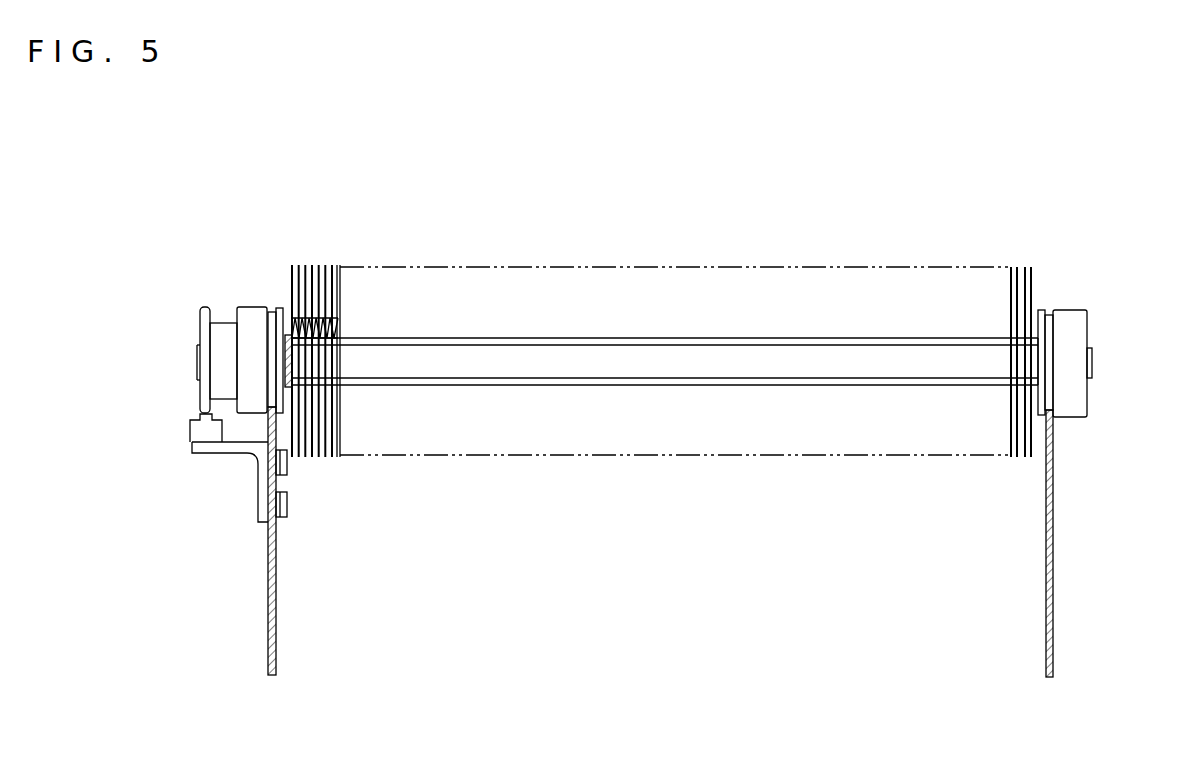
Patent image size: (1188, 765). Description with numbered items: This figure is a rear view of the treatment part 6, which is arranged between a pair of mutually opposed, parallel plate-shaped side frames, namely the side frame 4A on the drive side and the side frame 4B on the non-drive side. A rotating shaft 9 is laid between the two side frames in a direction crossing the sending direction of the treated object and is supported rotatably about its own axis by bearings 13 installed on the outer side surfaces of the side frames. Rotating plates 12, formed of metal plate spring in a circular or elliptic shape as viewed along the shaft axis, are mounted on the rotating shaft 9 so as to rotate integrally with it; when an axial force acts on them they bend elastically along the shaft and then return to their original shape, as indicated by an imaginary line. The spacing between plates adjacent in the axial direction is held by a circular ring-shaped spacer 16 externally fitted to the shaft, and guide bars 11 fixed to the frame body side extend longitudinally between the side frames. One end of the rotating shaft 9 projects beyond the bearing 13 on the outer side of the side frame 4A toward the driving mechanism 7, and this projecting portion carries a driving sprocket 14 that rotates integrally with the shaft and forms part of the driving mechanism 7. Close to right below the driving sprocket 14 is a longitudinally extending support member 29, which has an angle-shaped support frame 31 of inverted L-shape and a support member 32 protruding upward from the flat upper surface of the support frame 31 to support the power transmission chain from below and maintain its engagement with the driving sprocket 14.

The treatment part 6 is at (885, 212).
The rotating shaft 9 is at (638, 343).
The rotating plate 12 is at (332, 268).
The guide bar 11 is at (318, 320).
The spacer 16 is at (333, 388).
The bearing 13 is at (253, 307).
The driving sprocket 14 is at (198, 338).
The driving mechanism 7 is at (167, 500).
The support member 32 is at (190, 430).
The support member 29 is at (242, 472).
The support frame 31 is at (257, 493).
The side frame on the drive side 4A is at (268, 645).
The side frame on the non-drive side 4B is at (1053, 640).